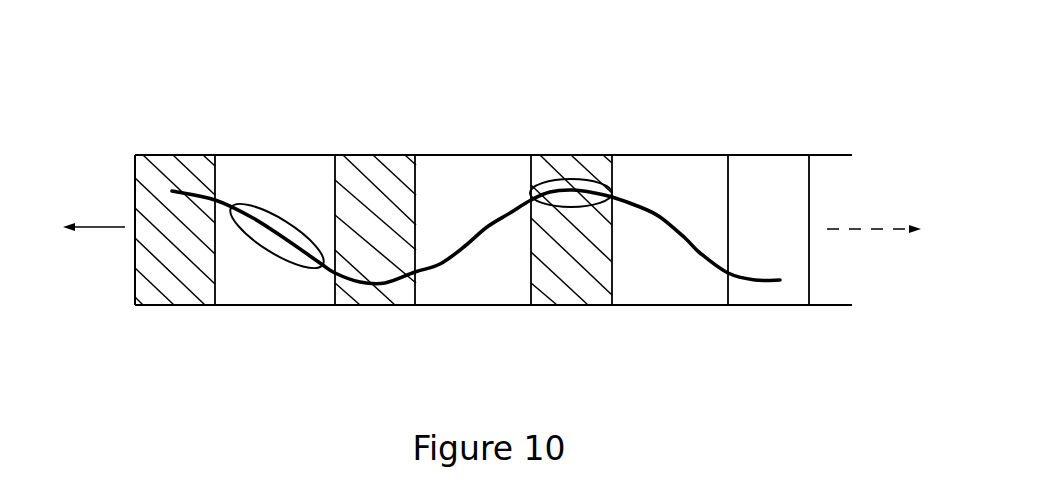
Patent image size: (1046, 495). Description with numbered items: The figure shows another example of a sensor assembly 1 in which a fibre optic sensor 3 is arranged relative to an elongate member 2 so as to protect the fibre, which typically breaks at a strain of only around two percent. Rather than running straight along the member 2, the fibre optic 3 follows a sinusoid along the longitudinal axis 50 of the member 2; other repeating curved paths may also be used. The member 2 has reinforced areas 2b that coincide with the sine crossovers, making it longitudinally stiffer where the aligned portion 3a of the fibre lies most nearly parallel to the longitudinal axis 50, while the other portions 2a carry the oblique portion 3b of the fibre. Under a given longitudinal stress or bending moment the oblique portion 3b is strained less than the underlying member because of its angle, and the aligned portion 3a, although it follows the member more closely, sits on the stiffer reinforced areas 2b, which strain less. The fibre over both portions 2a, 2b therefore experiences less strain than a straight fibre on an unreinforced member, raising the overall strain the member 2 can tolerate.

The sensor assembly 1 is at (808, 70).
The member 2 is at (852, 336).
The other portions of the member 2a is at (547, 175).
The reinforced areas of the member 2b is at (313, 290).
The fibre optic sensor 3 is at (473, 242).
The aligned portion of the optic fibre 3a is at (575, 175).
The oblique portion of the optic fibre 3b is at (278, 260).
The longitudinal axis 50 is at (874, 214).